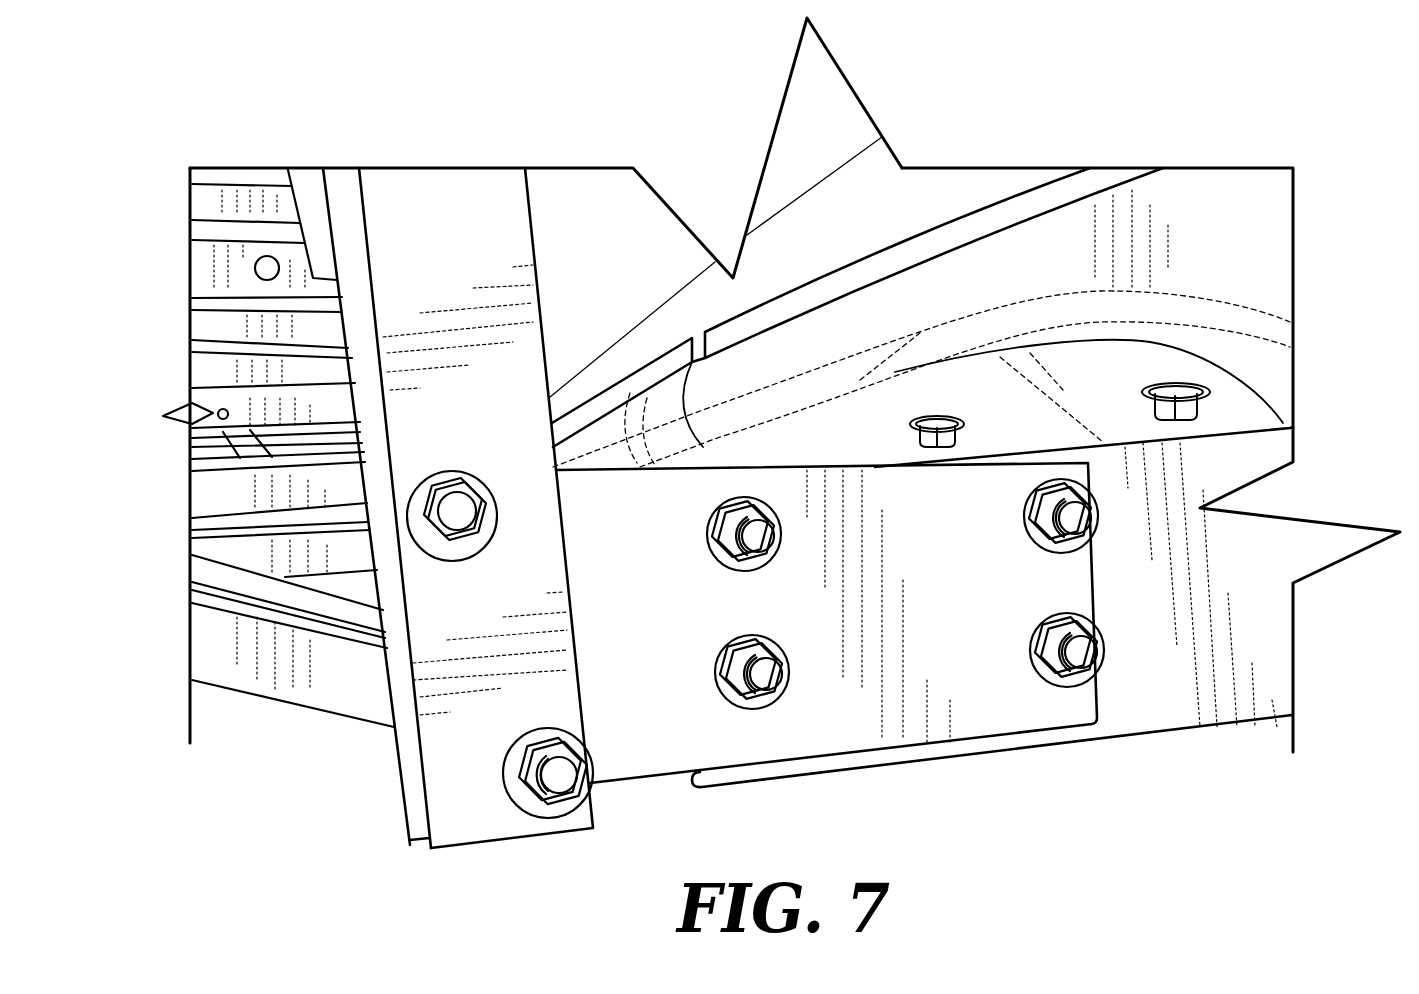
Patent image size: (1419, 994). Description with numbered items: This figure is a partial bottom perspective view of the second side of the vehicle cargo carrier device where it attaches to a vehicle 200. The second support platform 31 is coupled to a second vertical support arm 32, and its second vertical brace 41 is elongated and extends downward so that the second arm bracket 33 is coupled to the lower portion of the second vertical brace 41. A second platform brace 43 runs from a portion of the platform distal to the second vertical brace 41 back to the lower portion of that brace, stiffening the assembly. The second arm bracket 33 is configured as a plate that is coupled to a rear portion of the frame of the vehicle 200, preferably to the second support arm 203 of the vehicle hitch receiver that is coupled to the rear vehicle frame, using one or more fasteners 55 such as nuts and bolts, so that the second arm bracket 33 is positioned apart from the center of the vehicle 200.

The second support platform 31 is at (243, 713).
The second vertical support arm 32 is at (467, 715).
The second arm bracket 33 is at (858, 713).
The second vertical brace 41 is at (358, 266).
The second platform brace 43 is at (370, 700).
The fasteners 55 is at (758, 690).
The vehicle 200 is at (1205, 248).
The second support arm 203 is at (1135, 688).